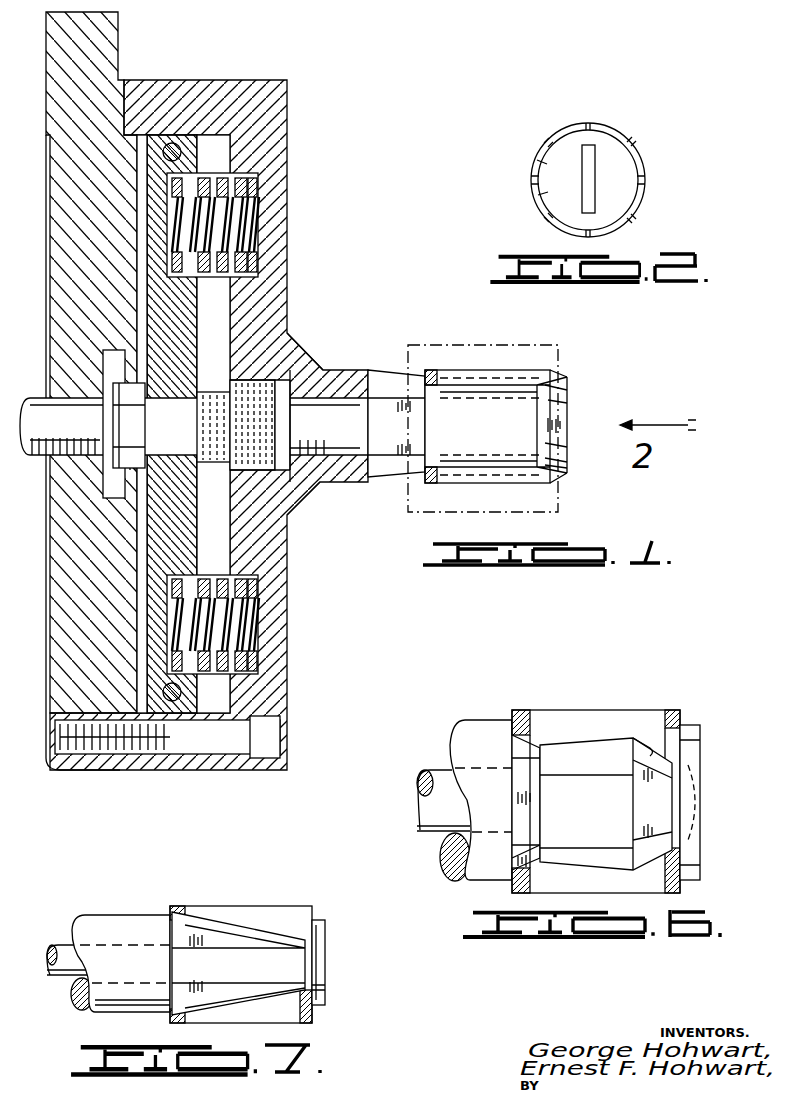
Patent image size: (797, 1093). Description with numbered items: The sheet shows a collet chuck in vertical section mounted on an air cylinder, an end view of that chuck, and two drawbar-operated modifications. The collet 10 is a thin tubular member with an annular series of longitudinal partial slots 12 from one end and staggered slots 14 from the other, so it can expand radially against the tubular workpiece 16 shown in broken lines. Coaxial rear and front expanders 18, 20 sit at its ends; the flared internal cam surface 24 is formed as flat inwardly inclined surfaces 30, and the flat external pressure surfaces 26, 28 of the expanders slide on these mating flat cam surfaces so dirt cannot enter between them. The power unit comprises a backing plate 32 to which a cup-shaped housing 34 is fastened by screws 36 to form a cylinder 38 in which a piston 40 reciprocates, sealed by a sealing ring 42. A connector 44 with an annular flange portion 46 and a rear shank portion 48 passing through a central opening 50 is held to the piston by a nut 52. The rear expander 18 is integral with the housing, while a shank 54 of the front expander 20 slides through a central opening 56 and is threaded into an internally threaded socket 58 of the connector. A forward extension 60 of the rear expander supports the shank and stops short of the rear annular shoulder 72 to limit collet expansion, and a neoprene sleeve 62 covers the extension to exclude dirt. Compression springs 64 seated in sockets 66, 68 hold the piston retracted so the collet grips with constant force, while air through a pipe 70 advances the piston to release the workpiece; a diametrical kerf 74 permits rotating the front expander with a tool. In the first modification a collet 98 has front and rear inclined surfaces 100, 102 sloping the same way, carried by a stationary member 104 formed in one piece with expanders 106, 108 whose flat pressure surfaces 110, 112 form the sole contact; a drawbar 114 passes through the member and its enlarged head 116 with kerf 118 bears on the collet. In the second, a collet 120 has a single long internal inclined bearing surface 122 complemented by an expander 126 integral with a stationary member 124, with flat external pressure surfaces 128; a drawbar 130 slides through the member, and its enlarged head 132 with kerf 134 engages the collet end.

In FIG. 1, the collet 10 is at (556, 368).
In FIG. 2, the collet 10 is at (650, 170).
In FIG. 2, the longitudinal partial slots 12 is at (600, 128).
In FIG. 2, the slots 14 is at (593, 158).
In FIG. 1, the tubular workpiece 16 is at (462, 346).
In FIG. 1, the rear expander 18 is at (402, 370).
In FIG. 1, the front expander 20 is at (571, 401).
In FIG. 2, the front expander 20 is at (546, 190).
In FIG. 1, the internal cam surface 24 is at (571, 386).
In FIG. 1, the external pressure surface 26 is at (410, 405).
In FIG. 1, the external pressure surface 28 is at (562, 425).
In FIG. 2, the external pressure surface 28 is at (642, 182).
In FIG. 2, the inwardly inclined flat surfaces 30 is at (630, 198).
In FIG. 1, the backing plate 32 is at (105, 48).
In FIG. 1, the cup-shaped housing 34 is at (287, 135).
In FIG. 1, the screws 36 is at (192, 770).
In FIG. 1, the cylinder 38 is at (215, 135).
In FIG. 1, the piston 40 is at (180, 310).
In FIG. 1, the sealing ring 42 is at (163, 692).
In FIG. 1, the connector 44 is at (302, 370).
In FIG. 1, the annular flange portion 46 is at (226, 381).
In FIG. 1, the rear shank portion 48 is at (174, 392).
In FIG. 1, the central opening 50 is at (172, 470).
In FIG. 1, the nut 52 is at (104, 380).
In FIG. 1, the shank 54 is at (356, 395).
In FIG. 1, the central opening 56 is at (366, 400).
In FIG. 1, the internally threaded socket 58 is at (245, 480).
In FIG. 1, the forward extension 60 is at (492, 392).
In FIG. 1, the sleeve 62 is at (452, 379).
In FIG. 1, the compression springs 64 is at (258, 180).
In FIG. 1, the sockets 66 is at (172, 610).
In FIG. 1, the sockets 68 is at (258, 612).
In FIG. 1, the pipe 70 is at (36, 456).
In FIG. 1, the rear annular shoulder 72 is at (568, 462).
In FIG. 1, the diametrical kerf 74 is at (568, 446).
In FIG. 2, the diametrical kerf 74 is at (634, 150).
In FIG. 6, the collet 98 is at (625, 708).
In FIG. 6, the front inclined surface 100 is at (650, 750).
In FIG. 6, the rear inclined surface 102 is at (530, 730).
In FIG. 6, the stationary member 104 is at (472, 862).
In FIG. 6, the expander 106 is at (640, 805).
In FIG. 6, the expander 108 is at (516, 878).
In FIG. 6, the flat pressure surfaces 110 is at (642, 780).
In FIG. 6, the flat pressure surfaces 112 is at (540, 802).
In FIG. 6, the drawbar 114 is at (430, 818).
In FIG. 6, the enlarged head 116 is at (698, 738).
In FIG. 6, the kerf 118 is at (700, 800).
In FIG. 7, the collet 120 is at (272, 908).
In FIG. 7, the internal inclined bearing surface 122 is at (300, 930).
In FIG. 7, the stationary member 124 is at (120, 915).
In FIG. 7, the expander 126 is at (190, 908).
In FIG. 7, the external pressure surfaces 128 is at (182, 942).
In FIG. 7, the drawbar 130 is at (62, 990).
In FIG. 7, the enlarged head 132 is at (326, 930).
In FIG. 7, the kerf 134 is at (326, 962).